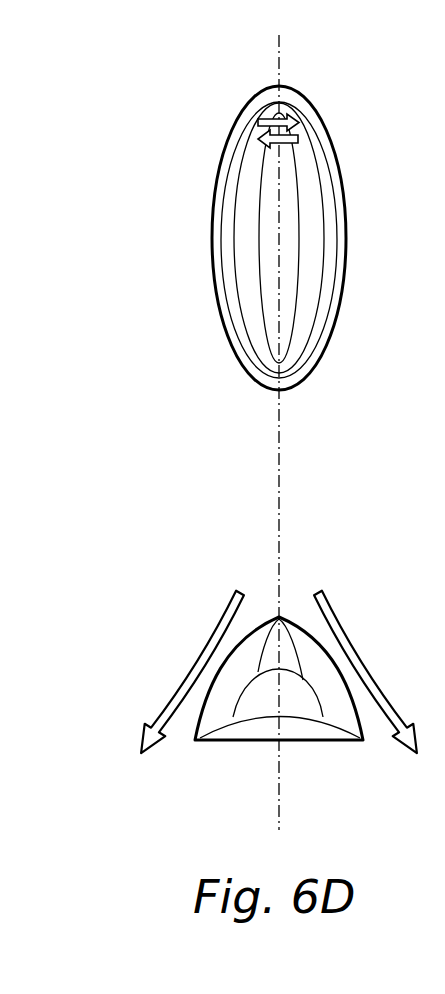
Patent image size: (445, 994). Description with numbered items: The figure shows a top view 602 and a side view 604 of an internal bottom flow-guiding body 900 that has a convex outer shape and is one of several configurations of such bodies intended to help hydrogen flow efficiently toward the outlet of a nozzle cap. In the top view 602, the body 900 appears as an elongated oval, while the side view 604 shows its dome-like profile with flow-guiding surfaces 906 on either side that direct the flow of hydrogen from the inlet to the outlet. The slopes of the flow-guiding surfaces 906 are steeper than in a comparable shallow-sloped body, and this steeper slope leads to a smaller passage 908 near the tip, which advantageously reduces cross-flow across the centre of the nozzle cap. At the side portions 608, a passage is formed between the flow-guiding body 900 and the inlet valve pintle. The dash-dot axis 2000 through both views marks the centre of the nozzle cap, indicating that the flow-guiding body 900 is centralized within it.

The internal bottom flow-guiding body 900 is at (229, 222).
The passage 908 is at (197, 123).
The top view 602 is at (382, 106).
The flow-guiding surfaces 906 is at (228, 252).
The side portions 608 is at (263, 348).
The side view 604 is at (216, 822).
The axis 2000 is at (273, 773).